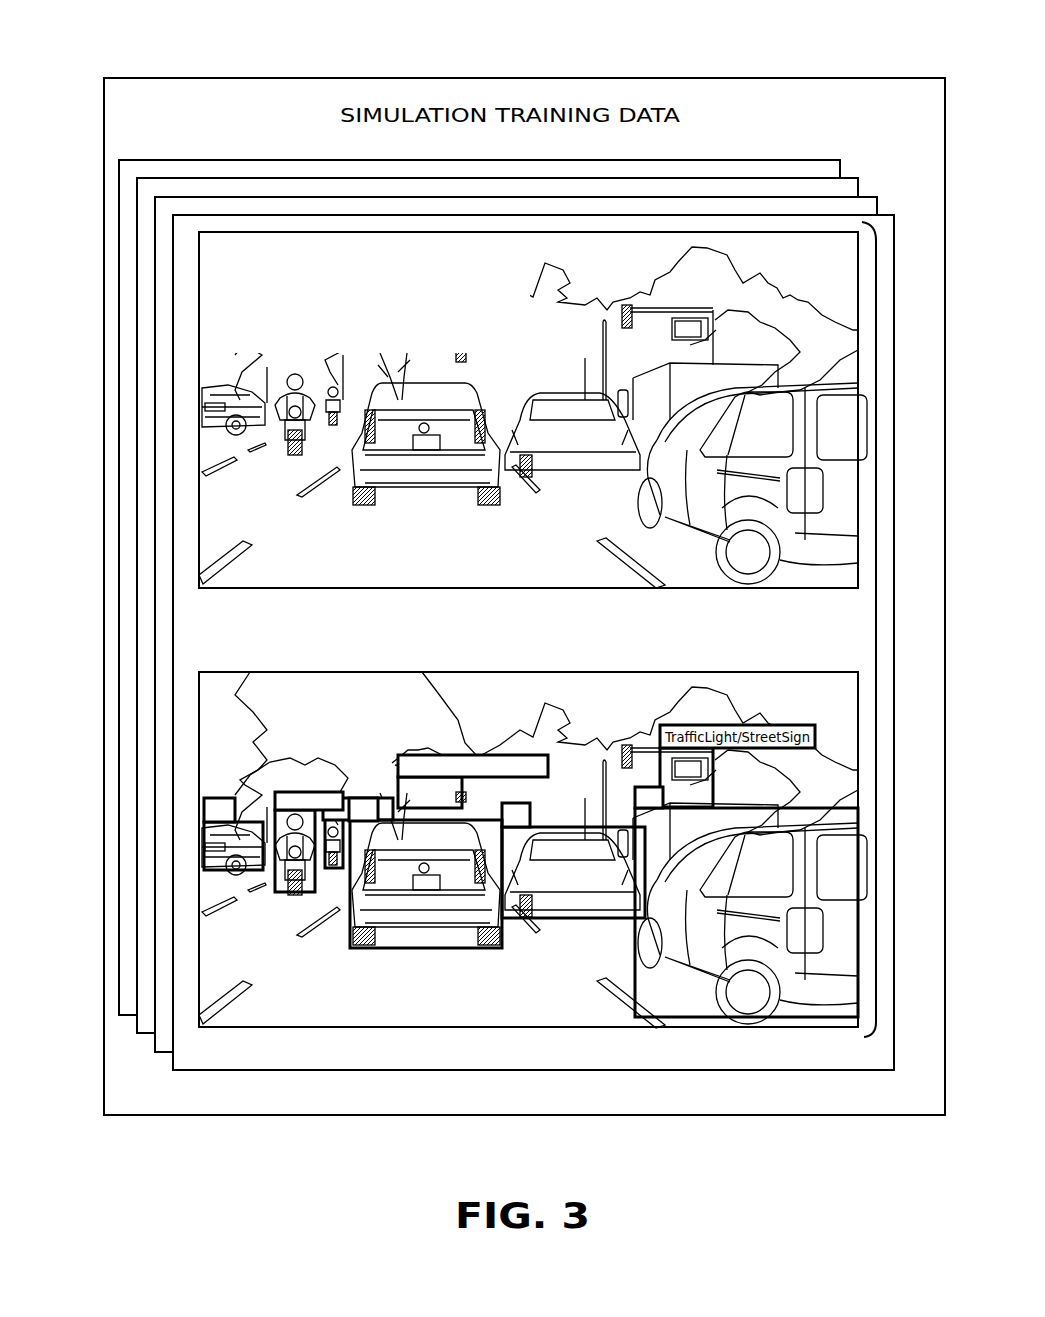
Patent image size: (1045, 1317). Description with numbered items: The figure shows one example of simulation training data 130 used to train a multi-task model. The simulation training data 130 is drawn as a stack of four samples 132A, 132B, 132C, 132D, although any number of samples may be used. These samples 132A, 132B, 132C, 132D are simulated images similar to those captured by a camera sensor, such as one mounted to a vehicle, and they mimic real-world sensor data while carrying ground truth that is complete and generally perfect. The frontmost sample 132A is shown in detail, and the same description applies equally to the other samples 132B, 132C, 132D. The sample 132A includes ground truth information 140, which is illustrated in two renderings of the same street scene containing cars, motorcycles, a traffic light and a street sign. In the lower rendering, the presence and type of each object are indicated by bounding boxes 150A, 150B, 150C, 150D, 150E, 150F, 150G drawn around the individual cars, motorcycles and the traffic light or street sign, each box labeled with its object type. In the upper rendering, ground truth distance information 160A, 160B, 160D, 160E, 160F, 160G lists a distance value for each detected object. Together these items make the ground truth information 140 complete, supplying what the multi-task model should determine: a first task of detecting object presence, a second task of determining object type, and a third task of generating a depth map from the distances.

The simulation training data 130 is at (262, 78).
The sample 132A is at (884, 216).
The sample 132B is at (866, 195).
The sample 132C is at (860, 192).
The sample 132D is at (790, 160).
The ground truth information 140 is at (877, 633).
The bounding box 150A is at (225, 870).
The bounding box 150B is at (288, 892).
The bounding box 150C is at (328, 868).
The bounding box 150D is at (422, 948).
The bounding box 150E is at (565, 918).
The bounding box 150F is at (680, 1020).
The bounding box 150G is at (460, 755).
The ground truth distance information 160A is at (203, 250).
The ground truth distance information 160B is at (203, 268).
The ground truth distance information 160D is at (203, 286).
The ground truth distance information 160E is at (203, 304).
The ground truth distance information 160F is at (203, 322).
The ground truth distance information 160G is at (203, 340).